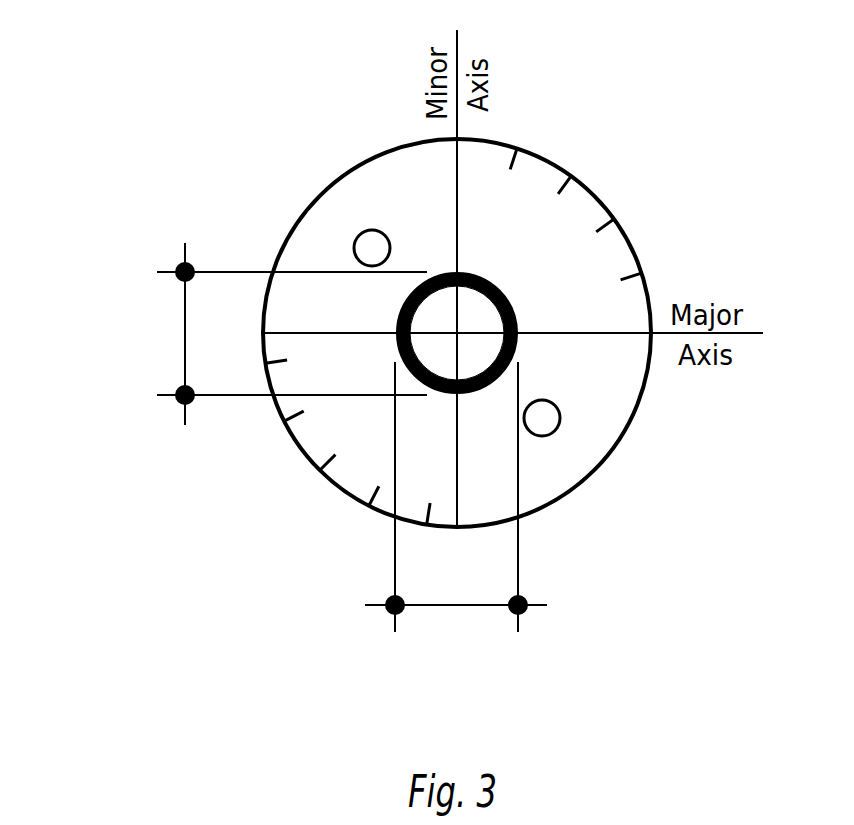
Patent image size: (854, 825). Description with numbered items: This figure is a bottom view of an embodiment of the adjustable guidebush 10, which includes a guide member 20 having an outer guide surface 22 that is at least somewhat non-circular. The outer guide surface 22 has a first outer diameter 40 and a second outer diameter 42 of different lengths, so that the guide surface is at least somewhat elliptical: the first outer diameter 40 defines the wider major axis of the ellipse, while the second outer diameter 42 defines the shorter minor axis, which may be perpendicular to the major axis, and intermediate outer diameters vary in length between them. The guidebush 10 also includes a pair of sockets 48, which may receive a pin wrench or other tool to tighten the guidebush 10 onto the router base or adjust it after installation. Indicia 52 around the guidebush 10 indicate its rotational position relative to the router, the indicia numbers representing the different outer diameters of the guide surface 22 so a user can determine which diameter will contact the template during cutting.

The adjustable guidebush 10 is at (359, 131).
The guide member 20 is at (523, 345).
The outer guide surface 22 is at (483, 275).
The first outer diameter 40 is at (458, 608).
The second outer diameter 42 is at (185, 343).
The sockets 48 is at (368, 242).
The indicia 52 is at (606, 167).